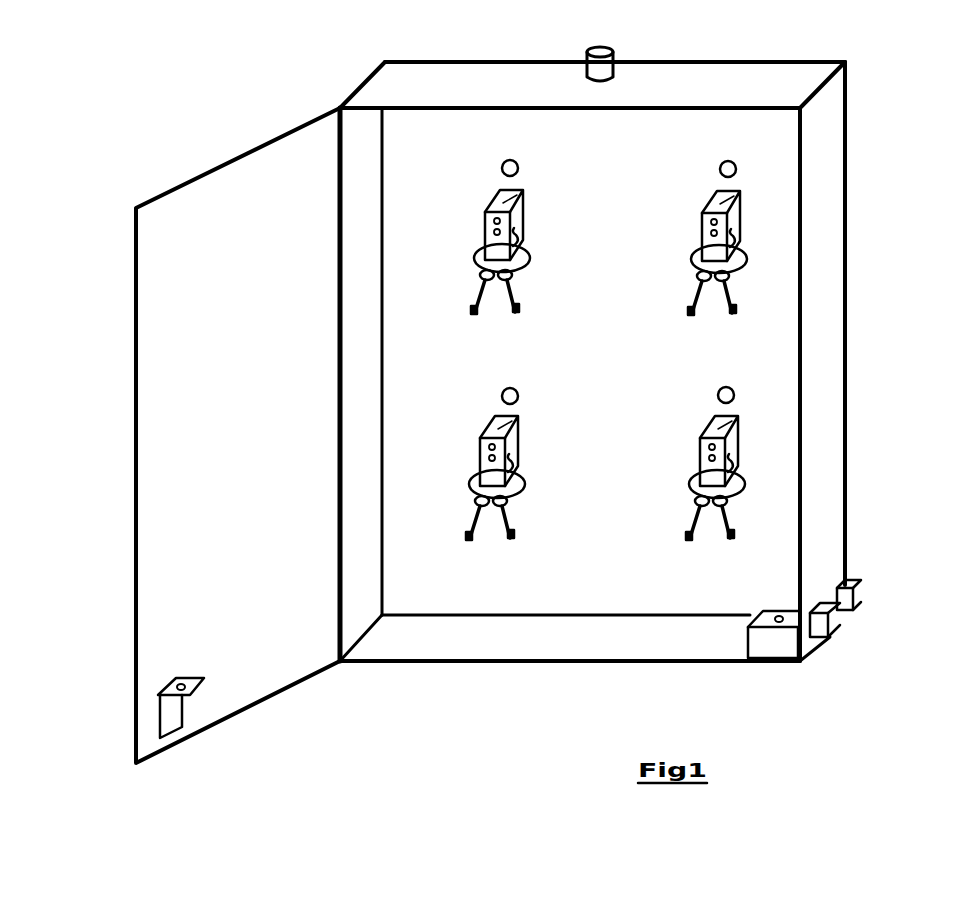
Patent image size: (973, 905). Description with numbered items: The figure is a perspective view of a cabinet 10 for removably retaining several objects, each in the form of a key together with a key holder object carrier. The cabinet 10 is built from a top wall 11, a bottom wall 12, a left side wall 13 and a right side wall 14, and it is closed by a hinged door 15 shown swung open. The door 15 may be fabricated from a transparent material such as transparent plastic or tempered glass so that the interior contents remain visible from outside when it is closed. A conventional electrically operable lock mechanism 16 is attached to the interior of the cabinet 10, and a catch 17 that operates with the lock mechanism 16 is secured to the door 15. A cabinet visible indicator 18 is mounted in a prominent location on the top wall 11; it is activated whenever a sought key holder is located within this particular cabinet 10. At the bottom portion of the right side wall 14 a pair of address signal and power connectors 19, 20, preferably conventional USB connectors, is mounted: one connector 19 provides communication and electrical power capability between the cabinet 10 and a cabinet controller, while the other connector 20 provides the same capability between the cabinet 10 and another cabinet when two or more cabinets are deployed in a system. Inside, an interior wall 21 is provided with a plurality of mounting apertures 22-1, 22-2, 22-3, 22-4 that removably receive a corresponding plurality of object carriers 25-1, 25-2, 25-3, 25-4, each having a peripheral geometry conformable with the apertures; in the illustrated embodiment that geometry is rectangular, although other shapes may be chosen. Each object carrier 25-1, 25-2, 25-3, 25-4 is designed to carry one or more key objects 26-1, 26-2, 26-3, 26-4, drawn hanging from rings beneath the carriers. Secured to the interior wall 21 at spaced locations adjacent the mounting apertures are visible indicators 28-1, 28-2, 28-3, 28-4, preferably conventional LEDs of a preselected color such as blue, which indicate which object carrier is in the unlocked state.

The cabinet 10 is at (852, 147).
The top wall 11 is at (730, 83).
The bottom wall 12 is at (603, 641).
The left side wall 13 is at (357, 140).
The right side wall 14 is at (818, 312).
The hinged door 15 is at (165, 363).
The lock mechanism 16 is at (765, 645).
The catch 17 is at (172, 721).
The cabinet visible indicator 18 is at (602, 68).
The address signal and power connector 19 is at (822, 632).
The address signal and power connector 20 is at (850, 604).
The interior wall 21 is at (780, 492).
The mounting aperture 22-1 is at (528, 228).
The mounting aperture 22-2 is at (745, 218).
The mounting aperture 22-3 is at (515, 452).
The mounting aperture 22-4 is at (745, 447).
The object carrier 25-1 is at (500, 204).
The object carrier 25-2 is at (725, 202).
The object carrier 25-3 is at (497, 428).
The object carrier 25-4 is at (717, 430).
The key object 26-1 is at (473, 297).
The key object 26-2 is at (730, 298).
The key object 26-3 is at (463, 533).
The key object 26-4 is at (730, 527).
The visible indicator 28-1 is at (505, 160).
The visible indicator 28-2 is at (736, 162).
The visible indicator 28-3 is at (502, 394).
The visible indicator 28-4 is at (732, 388).